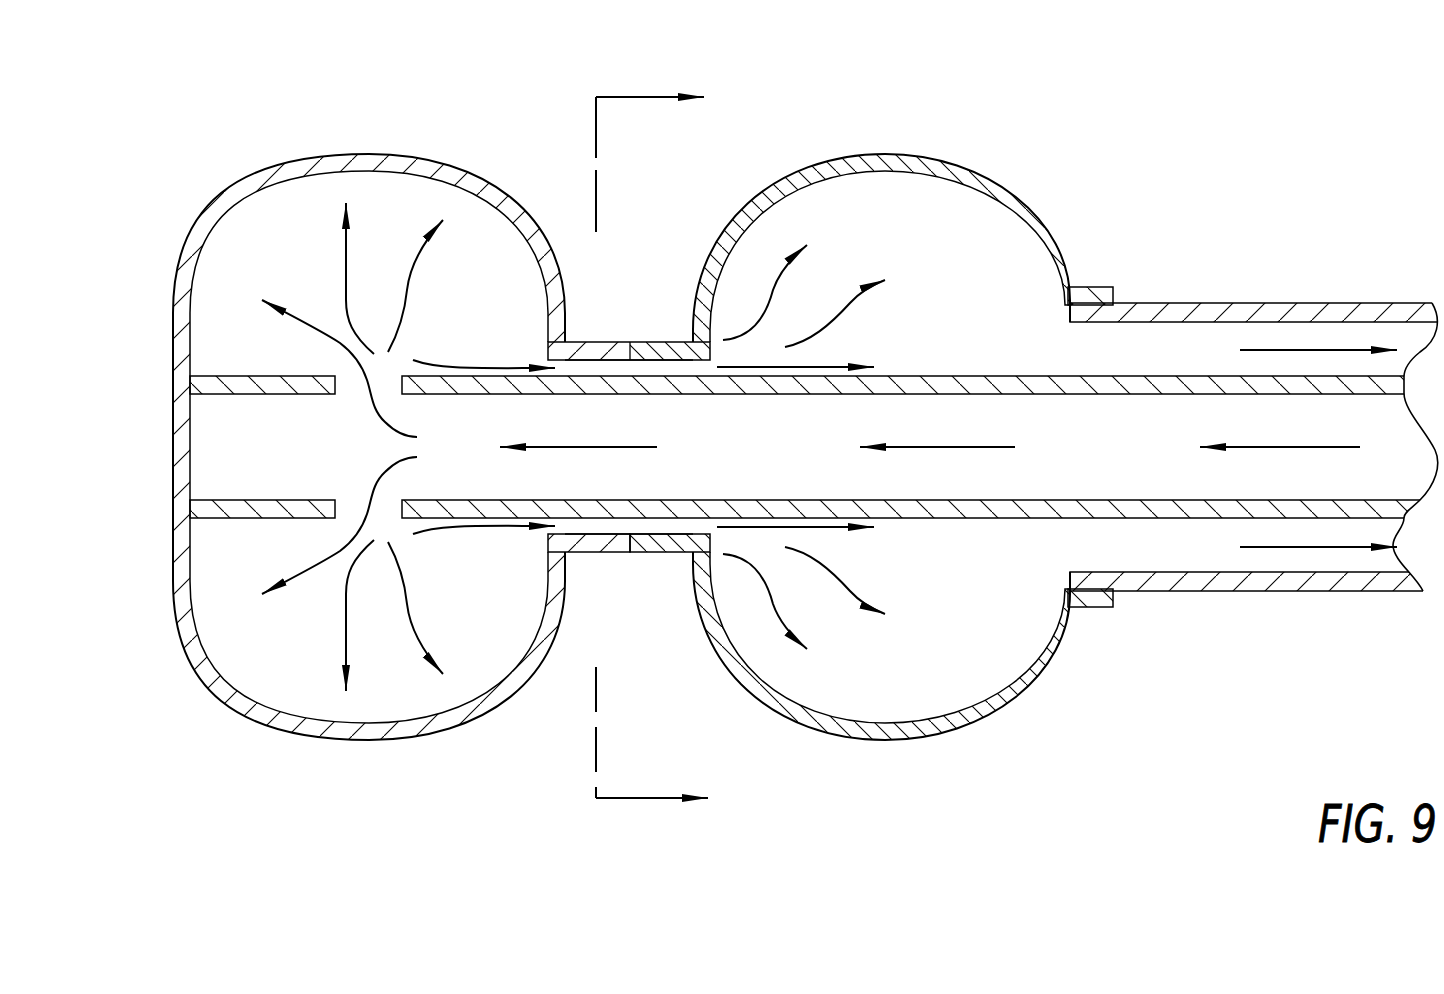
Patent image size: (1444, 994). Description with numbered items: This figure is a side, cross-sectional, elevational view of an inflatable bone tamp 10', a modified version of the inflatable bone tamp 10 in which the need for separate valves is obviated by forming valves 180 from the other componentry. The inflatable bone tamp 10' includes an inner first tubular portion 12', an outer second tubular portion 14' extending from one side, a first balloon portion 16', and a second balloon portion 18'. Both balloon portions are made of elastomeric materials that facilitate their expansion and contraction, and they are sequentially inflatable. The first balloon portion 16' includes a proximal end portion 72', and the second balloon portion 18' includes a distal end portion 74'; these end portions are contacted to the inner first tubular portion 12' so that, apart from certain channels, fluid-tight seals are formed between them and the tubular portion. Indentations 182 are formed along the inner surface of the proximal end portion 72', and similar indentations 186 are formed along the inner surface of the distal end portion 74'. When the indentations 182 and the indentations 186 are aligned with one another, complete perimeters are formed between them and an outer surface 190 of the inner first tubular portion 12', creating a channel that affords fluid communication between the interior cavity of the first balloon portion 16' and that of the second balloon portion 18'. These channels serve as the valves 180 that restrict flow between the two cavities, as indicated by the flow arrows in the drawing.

The inflatable bone tamp 10' is at (572, 385).
The first balloon portion 16' is at (369, 397).
The second balloon portion 18' is at (881, 396).
The inner first tubular portion 12' is at (817, 427).
The outer second tubular portion 14' is at (1256, 416).
The outer surface 190 is at (650, 377).
The indentations 182 is at (600, 360).
The indentations 186 is at (672, 360).
The valves 180 is at (673, 527).
The proximal end portion 72' is at (589, 586).
The distal end portion 74' is at (670, 600).
The inflatable bone tamp 10 is at (673, 448).